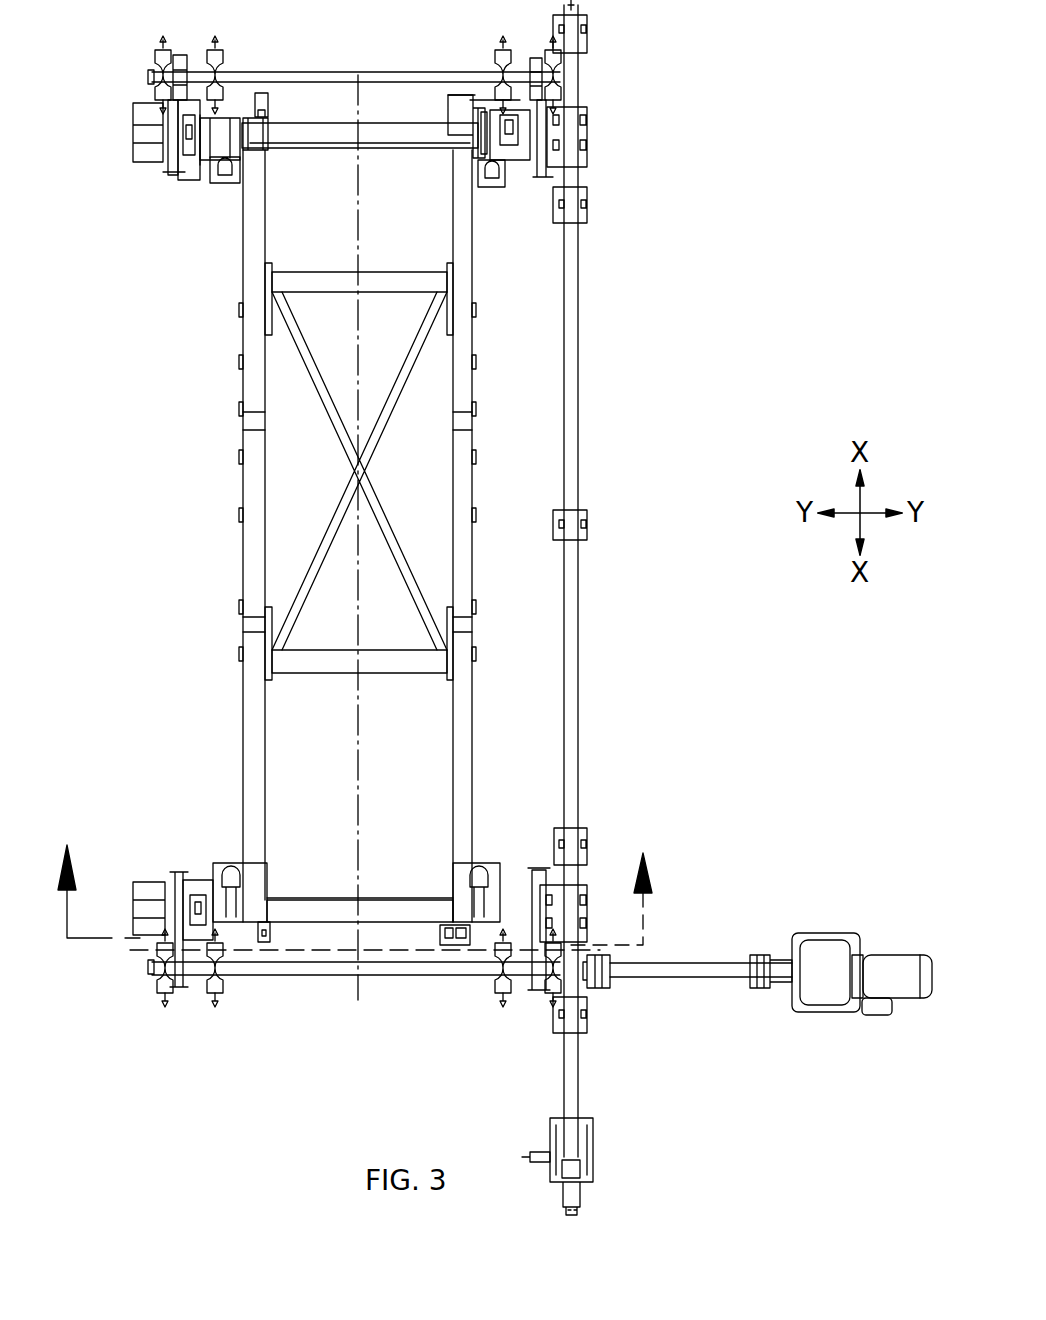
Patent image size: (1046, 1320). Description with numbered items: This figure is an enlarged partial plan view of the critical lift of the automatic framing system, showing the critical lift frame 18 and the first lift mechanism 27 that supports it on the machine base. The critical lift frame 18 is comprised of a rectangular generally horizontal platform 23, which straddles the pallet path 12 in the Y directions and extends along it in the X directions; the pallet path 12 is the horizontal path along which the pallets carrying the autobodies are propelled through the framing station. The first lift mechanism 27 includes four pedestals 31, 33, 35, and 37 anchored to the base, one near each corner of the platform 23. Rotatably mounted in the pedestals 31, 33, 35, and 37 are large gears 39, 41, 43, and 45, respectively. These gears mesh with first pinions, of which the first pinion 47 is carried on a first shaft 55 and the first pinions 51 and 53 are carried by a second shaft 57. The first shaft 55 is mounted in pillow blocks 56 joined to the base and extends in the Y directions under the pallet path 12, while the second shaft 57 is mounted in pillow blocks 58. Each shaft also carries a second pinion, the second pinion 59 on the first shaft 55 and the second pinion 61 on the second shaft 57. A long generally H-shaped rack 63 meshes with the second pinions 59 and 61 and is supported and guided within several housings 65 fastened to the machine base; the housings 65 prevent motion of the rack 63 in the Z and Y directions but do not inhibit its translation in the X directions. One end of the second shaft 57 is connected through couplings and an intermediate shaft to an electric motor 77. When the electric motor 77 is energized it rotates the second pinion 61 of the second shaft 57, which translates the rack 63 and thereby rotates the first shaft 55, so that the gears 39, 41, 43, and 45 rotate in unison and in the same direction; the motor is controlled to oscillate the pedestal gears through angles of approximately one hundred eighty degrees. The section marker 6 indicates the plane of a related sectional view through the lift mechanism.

The section line 6- 6 is at (355, 897).
The pallet path 12 is at (360, 253).
The critical lift frame 18 is at (243, 496).
The platform 23 is at (262, 778).
The first lift mechanism 27 is at (660, 985).
The pedestal 31 is at (148, 158).
The pedestal 33 is at (585, 138).
The pedestal 35 is at (588, 915).
The pedestal 37 is at (150, 882).
The gear 39 is at (180, 167).
The gear 41 is at (536, 177).
The gear 43 is at (540, 878).
The gear 45 is at (188, 880).
The first pinion 47 is at (185, 55).
The first pinion 51 is at (540, 992).
The first pinion 53 is at (183, 990).
The first shaft 55 is at (320, 77).
The pillow block 56 is at (223, 57).
The second shaft 57 is at (318, 978).
The pillow block 58 is at (222, 990).
The second pinion 59 is at (572, 67).
The second pinion 61 is at (595, 1000).
The rack 63 is at (575, 755).
The housing 65 is at (587, 835).
The electric motor 77 is at (890, 955).